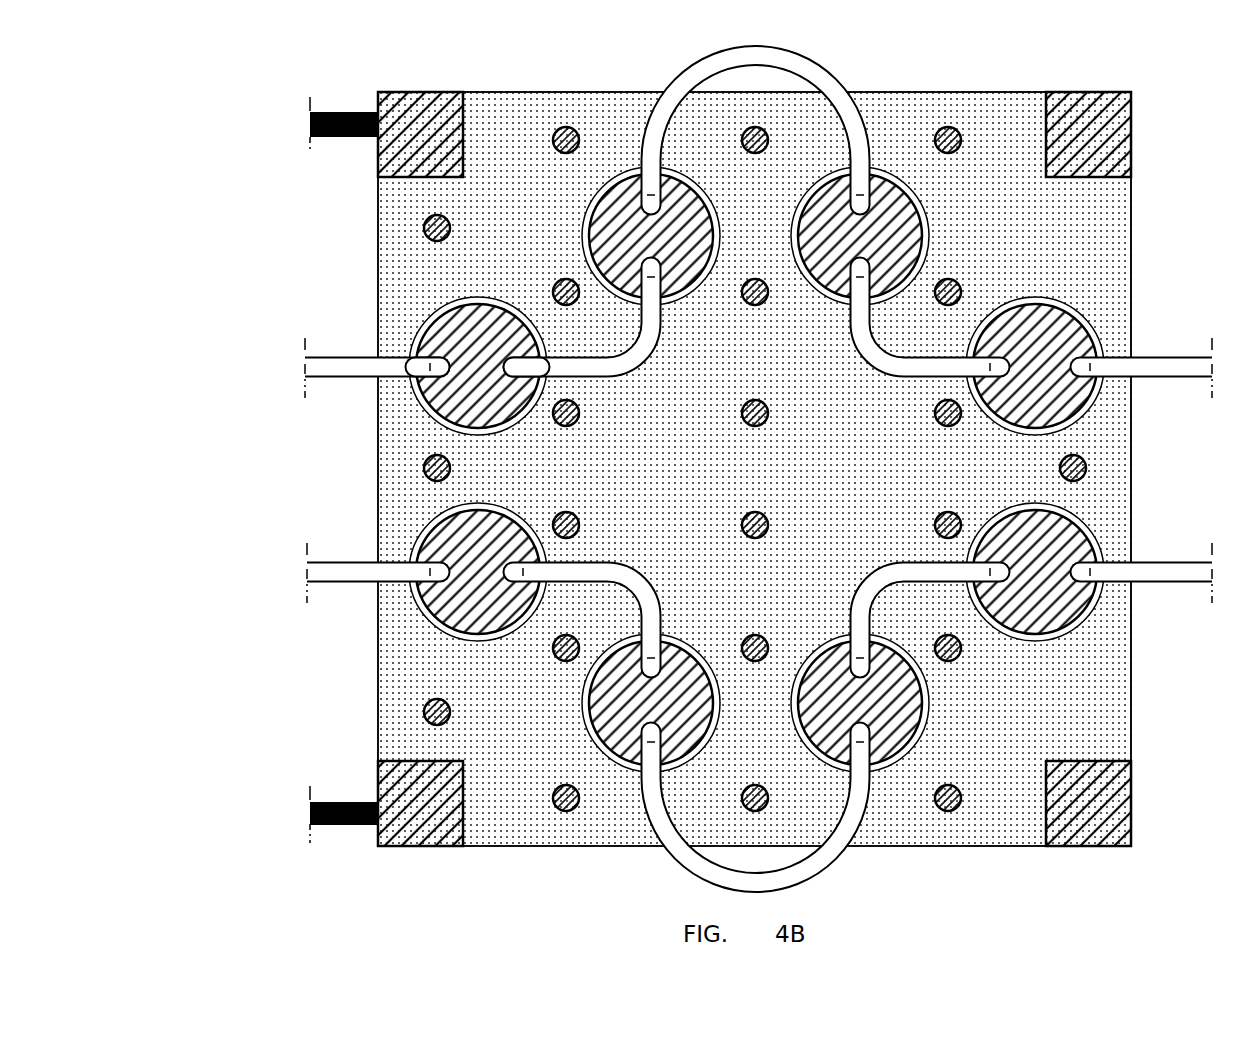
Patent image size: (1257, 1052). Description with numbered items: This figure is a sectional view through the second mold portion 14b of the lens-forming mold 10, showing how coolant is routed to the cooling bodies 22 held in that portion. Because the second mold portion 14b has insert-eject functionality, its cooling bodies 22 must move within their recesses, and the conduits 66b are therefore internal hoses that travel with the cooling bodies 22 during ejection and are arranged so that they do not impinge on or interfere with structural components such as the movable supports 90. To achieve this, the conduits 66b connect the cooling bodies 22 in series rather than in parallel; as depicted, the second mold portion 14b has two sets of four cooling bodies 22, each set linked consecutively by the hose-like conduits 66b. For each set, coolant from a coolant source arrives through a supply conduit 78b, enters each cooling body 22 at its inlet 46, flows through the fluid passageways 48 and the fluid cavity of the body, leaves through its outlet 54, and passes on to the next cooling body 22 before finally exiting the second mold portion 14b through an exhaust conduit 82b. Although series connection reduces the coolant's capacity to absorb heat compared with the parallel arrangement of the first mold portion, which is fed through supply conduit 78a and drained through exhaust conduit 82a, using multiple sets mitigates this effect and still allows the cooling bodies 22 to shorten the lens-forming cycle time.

The mold 10 is at (151, 83).
The second mold portion 14b is at (1122, 195).
The cooling body 22 is at (452, 400).
The inlet 46 is at (438, 357).
The fluid passageway 48 is at (413, 583).
The outlet 54 is at (528, 357).
The conduit 66b is at (836, 76).
The supply conduit 78a is at (328, 110).
The supply conduit 78b is at (338, 354).
The exhaust conduit 82a is at (338, 826).
The exhaust conduit 82b is at (1170, 357).
The movable support 90 is at (1080, 467).